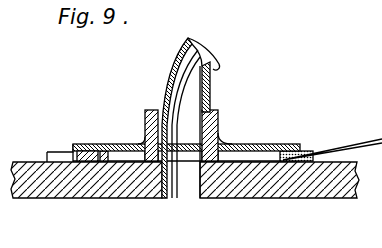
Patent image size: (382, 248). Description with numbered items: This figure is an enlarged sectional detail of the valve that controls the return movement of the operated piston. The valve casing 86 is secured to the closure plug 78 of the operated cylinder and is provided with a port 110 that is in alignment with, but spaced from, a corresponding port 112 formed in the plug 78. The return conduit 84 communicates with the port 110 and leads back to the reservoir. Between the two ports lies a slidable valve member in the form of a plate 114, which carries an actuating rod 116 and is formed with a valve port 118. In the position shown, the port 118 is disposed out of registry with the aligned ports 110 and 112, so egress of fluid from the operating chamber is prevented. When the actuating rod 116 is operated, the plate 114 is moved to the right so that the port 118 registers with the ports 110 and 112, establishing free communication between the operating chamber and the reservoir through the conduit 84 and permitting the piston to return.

The cylinder closure plug 78 is at (101, 185).
The return conduit 84 is at (215, 75).
The valve casing 86 is at (110, 150).
The port 110 is at (165, 112).
The port 112 is at (173, 197).
The valve plate 114 is at (240, 150).
The actuating rod 116 is at (328, 153).
The valve port 118 is at (105, 147).